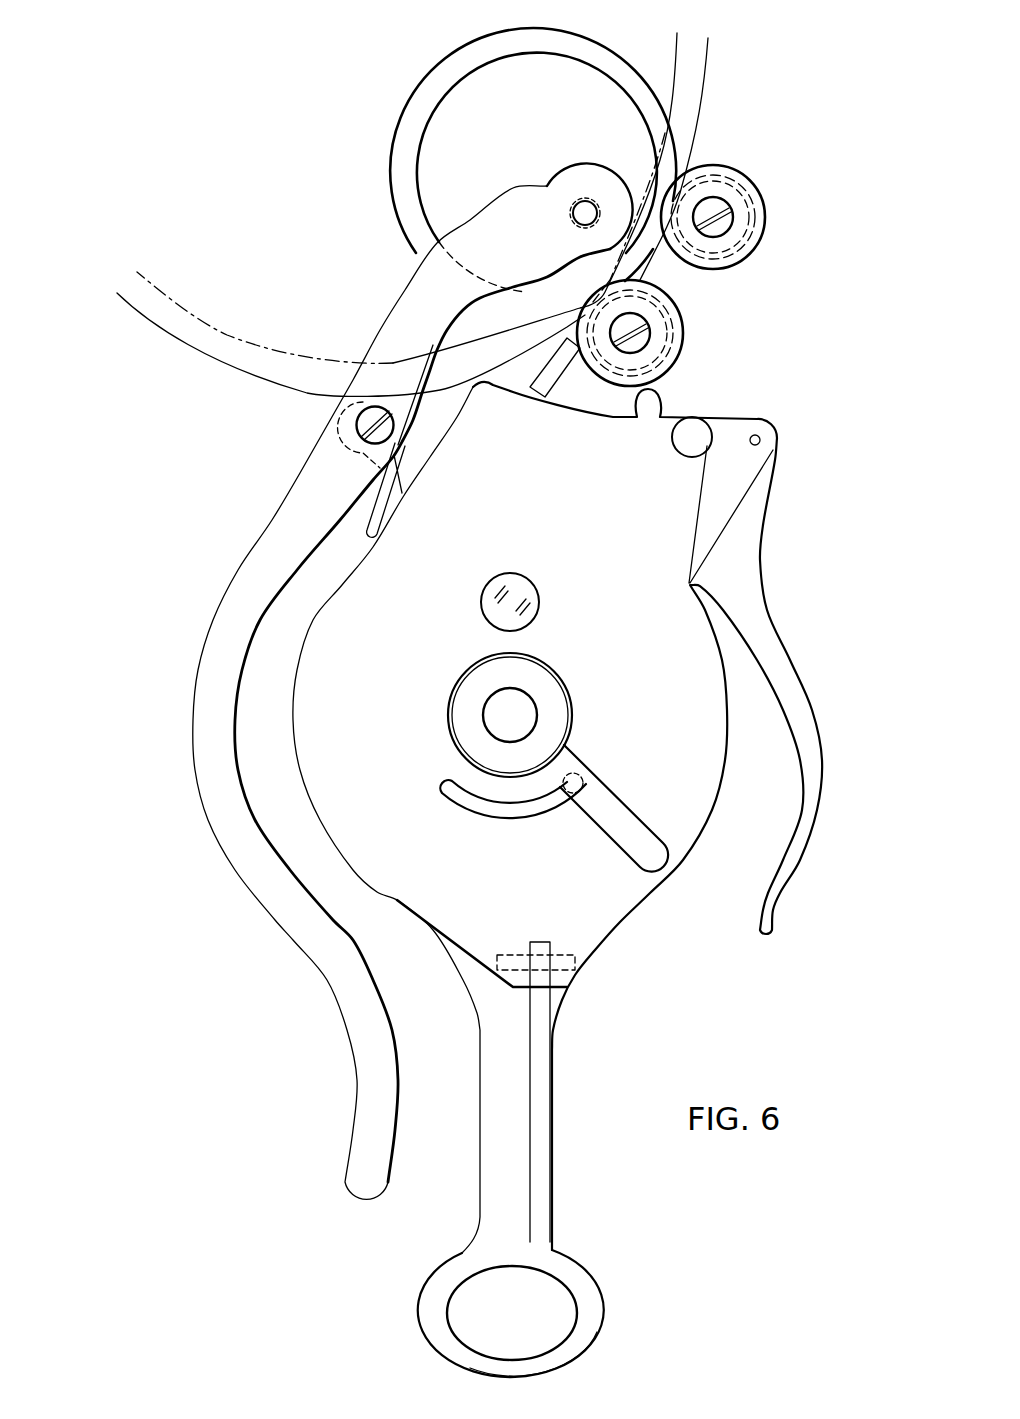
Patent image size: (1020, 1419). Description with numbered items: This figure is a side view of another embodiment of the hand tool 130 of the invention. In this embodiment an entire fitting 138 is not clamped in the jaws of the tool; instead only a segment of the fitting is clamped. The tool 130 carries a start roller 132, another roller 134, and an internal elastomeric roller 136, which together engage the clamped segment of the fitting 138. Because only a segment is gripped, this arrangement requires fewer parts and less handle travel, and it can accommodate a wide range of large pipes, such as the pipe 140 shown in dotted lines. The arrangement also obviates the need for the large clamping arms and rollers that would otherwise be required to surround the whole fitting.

The tool 130 is at (818, 645).
The start roller 132 is at (680, 362).
The roller 134 is at (766, 232).
The internal elastomeric roller 136 is at (562, 172).
The fitting 138 is at (677, 152).
The pipe 140 is at (707, 97).